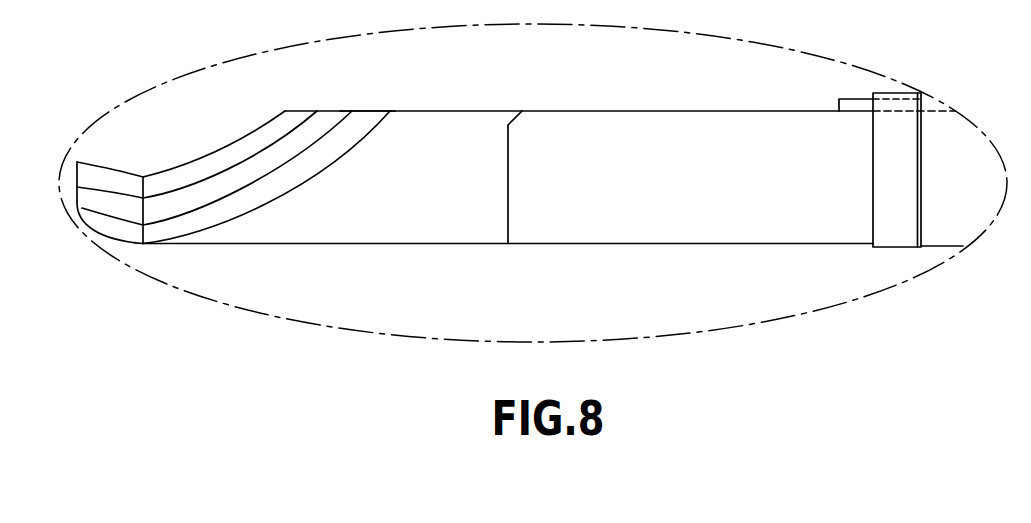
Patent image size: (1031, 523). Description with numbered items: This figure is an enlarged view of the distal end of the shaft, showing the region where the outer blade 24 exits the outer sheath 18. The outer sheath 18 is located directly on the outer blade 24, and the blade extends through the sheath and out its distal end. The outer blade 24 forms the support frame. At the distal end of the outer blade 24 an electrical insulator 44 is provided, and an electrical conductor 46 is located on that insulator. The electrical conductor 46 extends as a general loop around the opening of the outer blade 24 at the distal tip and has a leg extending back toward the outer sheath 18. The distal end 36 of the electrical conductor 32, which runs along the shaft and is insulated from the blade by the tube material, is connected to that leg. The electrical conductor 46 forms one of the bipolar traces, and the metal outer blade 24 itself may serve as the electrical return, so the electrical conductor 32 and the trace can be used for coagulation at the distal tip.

The outer sheath 18 is at (940, 247).
The outer blade 24 is at (197, 162).
The electrical conductor 32 is at (897, 100).
The distal end 36 is at (857, 98).
The electrical insulator 44 is at (328, 120).
The electrical conductor 46 is at (371, 111).